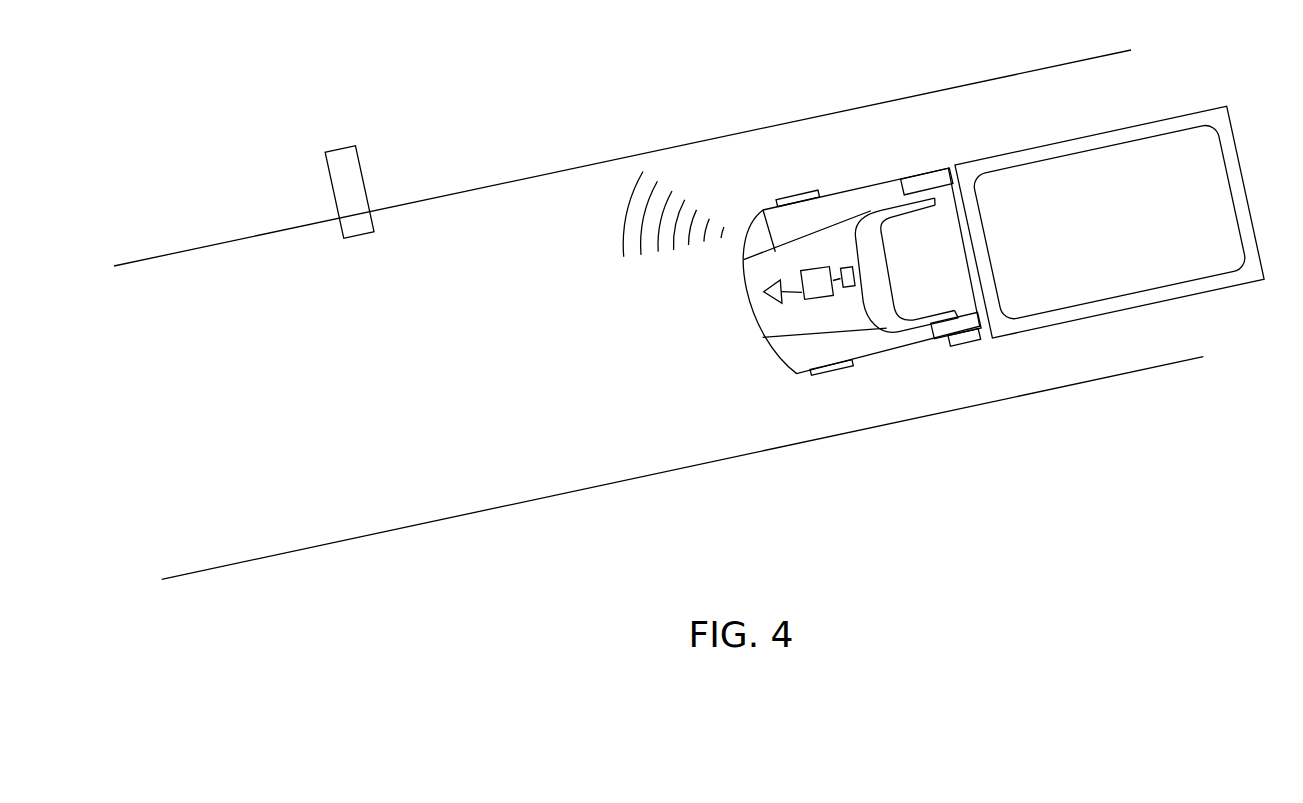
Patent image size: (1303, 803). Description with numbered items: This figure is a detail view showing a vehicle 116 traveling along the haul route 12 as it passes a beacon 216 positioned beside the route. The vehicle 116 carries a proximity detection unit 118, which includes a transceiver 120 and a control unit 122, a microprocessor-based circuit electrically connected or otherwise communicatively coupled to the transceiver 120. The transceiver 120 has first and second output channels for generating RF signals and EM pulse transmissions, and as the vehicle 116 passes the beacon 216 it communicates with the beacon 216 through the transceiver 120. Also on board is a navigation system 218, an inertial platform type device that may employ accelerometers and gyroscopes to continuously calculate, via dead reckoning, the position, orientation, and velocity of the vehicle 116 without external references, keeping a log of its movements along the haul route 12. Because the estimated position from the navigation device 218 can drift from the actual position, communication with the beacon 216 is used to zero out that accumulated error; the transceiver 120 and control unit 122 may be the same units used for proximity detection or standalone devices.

The haul route 12 is at (395, 508).
The vehicle 116 is at (1177, 147).
The proximity detection unit 118 is at (834, 311).
The transceiver 120 is at (780, 280).
The control unit 122 is at (812, 268).
The beacon 216 is at (340, 146).
The navigation system 218 is at (846, 268).